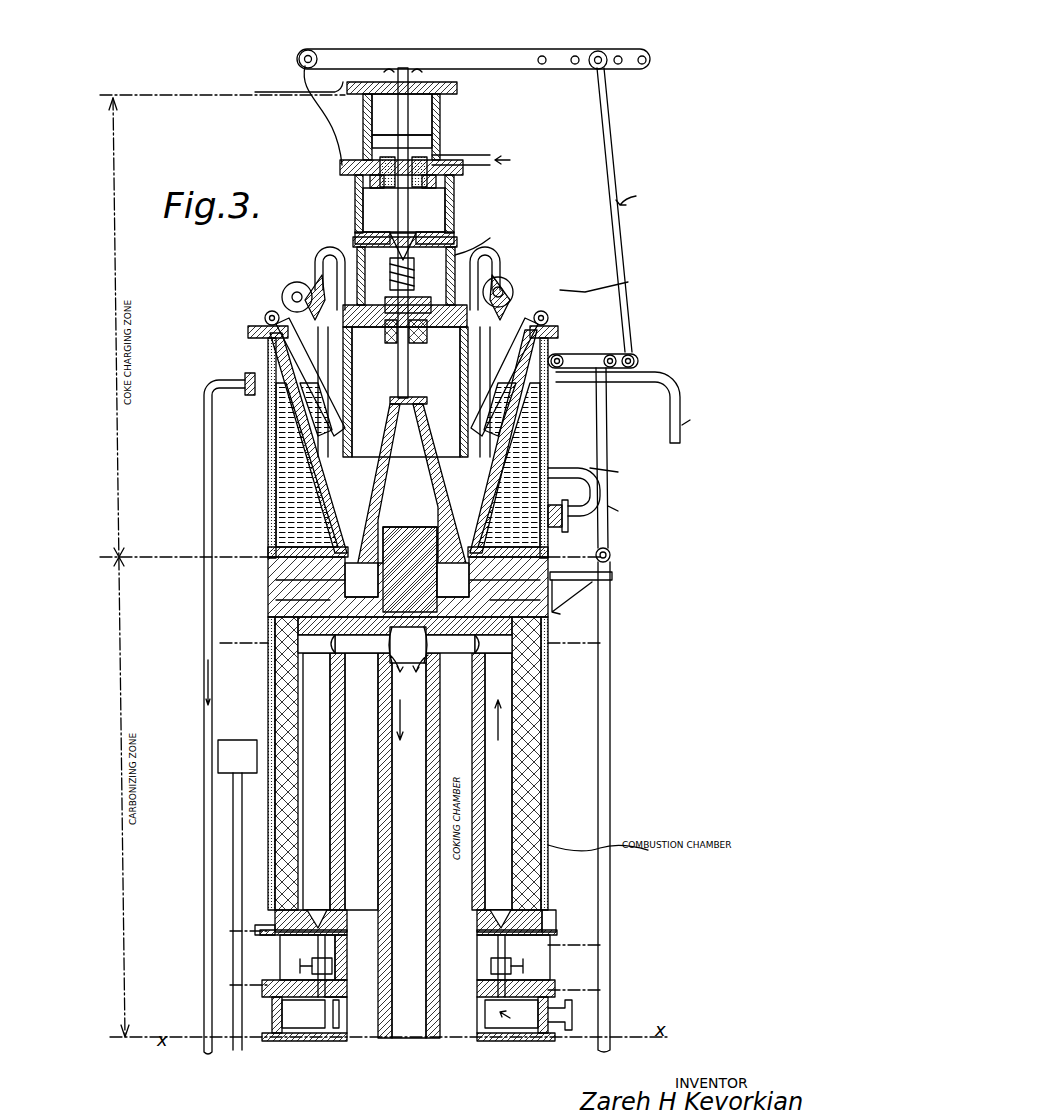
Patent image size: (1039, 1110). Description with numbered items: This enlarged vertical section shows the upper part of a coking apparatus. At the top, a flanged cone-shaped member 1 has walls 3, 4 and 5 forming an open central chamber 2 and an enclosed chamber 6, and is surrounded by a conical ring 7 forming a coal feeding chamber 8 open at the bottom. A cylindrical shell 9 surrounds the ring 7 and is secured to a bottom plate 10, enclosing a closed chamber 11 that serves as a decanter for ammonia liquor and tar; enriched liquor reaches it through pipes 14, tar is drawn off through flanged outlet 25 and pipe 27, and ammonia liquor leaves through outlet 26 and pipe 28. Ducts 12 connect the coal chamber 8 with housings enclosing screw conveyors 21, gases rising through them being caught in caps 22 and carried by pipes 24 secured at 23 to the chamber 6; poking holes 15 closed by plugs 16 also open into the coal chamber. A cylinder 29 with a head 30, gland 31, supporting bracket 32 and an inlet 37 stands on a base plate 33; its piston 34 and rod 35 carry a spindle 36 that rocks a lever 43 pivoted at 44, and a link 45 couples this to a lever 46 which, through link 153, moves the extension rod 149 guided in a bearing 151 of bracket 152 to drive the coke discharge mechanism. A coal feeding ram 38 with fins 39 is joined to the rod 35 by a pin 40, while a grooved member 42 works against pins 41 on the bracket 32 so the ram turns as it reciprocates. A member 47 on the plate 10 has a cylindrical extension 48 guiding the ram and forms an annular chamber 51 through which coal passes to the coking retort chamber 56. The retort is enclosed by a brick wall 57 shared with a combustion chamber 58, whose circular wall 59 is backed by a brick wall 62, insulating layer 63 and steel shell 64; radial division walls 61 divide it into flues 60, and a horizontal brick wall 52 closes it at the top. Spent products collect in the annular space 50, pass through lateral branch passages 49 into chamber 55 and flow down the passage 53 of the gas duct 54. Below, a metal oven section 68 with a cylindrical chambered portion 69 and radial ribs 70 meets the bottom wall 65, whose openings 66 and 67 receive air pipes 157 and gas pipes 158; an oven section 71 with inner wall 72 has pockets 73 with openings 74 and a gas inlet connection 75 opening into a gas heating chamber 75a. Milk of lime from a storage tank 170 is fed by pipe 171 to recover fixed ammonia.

The flanged cone-shaped member 1 is at (561, 332).
The open central chamber 2 is at (405, 392).
The wall 3 is at (327, 392).
The wall 4 is at (332, 376).
The wall 5 is at (340, 398).
The enclosed chamber 6 is at (247, 560).
The conical ring 7 is at (546, 382).
The coal feeding chamber 8 is at (600, 958).
The cylindrical shell 9 is at (548, 444).
The bottom plate 10 is at (510, 546).
The closed chamber 11 is at (519, 485).
The ducts 12 is at (308, 366).
The pipes 14 is at (276, 450).
The poking holes 15 is at (268, 326).
The plugs 16 is at (270, 312).
The screw conveyors 21 is at (290, 287).
The caps 22 is at (508, 286).
The securing point 23 is at (498, 262).
The pipes 24 is at (496, 242).
The flanged outlet 25 is at (558, 512).
The flanged outlet 26 is at (256, 398).
The pipe 27 is at (636, 385).
The pipe 28 is at (206, 552).
The cylinder 29 is at (440, 116).
The head 30 is at (457, 88).
The gland 31 is at (370, 192).
The supporting bracket 32 is at (454, 214).
The base plate 33 is at (385, 335).
The piston 34 is at (422, 143).
The piston rod 35 is at (408, 222).
The spindle 36 is at (398, 113).
The steam inlet 37 is at (478, 158).
The coal feeding ram 38 is at (380, 480).
The fins 39 is at (445, 498).
The pin 40 is at (427, 401).
The pins 41 is at (457, 244).
The grooved member 42 is at (390, 262).
The lever 43 is at (467, 58).
The pivot 44 is at (302, 67).
The link 45 is at (618, 238).
The lever 46 is at (588, 357).
The member 47 is at (408, 534).
The cylindrical extension 48 is at (383, 580).
The lateral branch passages 49 is at (405, 644).
The annular space 50 is at (405, 645).
The annular chamber 51 is at (407, 580).
The horizontal brick wall 52 is at (268, 595).
The passage 53 is at (404, 1052).
The gas duct 54 is at (390, 840).
The chamber 55 is at (408, 649).
The coking retort chamber 56 is at (428, 781).
The brick wall 57 is at (345, 810).
The combustion chamber 58 is at (319, 782).
The circular wall 59 is at (534, 712).
The combustion flues 60 is at (317, 808).
The radial division walls 61 is at (312, 662).
The wall 62 is at (545, 735).
The layer of heat insulating material 63 is at (548, 750).
The cylindrical steel shell 64 is at (548, 782).
The bottom wall 65 is at (265, 922).
The openings 66 is at (320, 916).
The openings 67 is at (501, 916).
The metal oven section 68 is at (556, 930).
The cylindrical chambered portion 69 is at (340, 965).
The radial ribs 70 is at (550, 947).
The oven section 71 is at (556, 994).
The inner cylindrical wall 72 is at (340, 1013).
The pockets 73 is at (311, 1011).
The opening 74 is at (316, 1014).
The gas inlet connection 75 is at (565, 1032).
The gas heating chamber 75a is at (512, 1020).
The extension rod 149 is at (610, 775).
The bearing 151 is at (612, 576).
The bracket 152 is at (585, 595).
The link 153 is at (610, 500).
The pipes 157 is at (318, 946).
The pipes 158 is at (505, 946).
The storage tank 170 is at (232, 753).
The pipe 171 is at (236, 847).